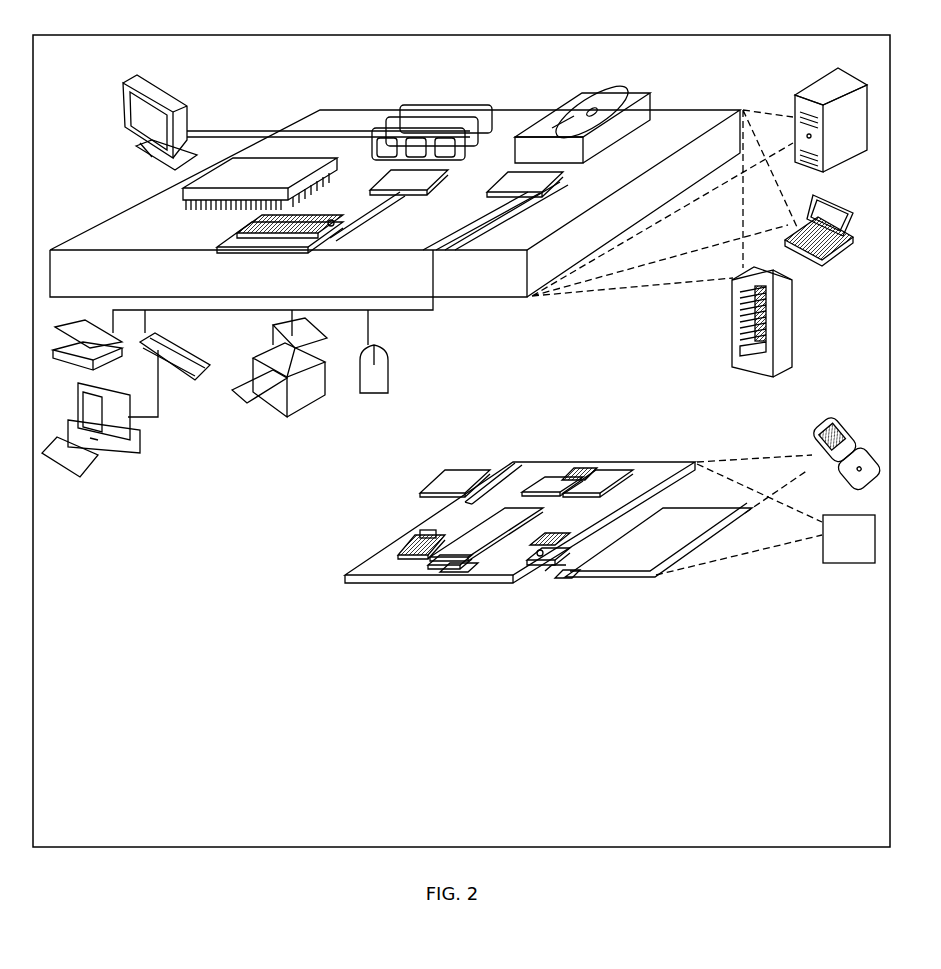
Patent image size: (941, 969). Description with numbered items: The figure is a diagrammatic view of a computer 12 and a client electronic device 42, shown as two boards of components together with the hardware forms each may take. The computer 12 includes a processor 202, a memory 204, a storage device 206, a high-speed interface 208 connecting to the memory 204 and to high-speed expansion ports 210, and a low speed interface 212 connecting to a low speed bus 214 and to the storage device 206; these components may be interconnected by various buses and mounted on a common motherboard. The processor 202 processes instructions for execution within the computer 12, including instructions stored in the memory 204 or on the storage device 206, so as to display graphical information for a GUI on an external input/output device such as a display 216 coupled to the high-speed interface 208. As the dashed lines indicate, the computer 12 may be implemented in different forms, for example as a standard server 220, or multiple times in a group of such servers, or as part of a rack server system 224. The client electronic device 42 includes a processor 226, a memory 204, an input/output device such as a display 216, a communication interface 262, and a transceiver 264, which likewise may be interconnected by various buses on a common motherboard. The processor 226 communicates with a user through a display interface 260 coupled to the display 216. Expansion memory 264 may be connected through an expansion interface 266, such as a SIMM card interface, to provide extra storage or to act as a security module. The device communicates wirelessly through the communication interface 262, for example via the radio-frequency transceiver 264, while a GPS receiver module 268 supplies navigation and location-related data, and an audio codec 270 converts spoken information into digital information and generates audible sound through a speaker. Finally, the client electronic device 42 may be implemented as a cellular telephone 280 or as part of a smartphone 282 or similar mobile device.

The computer 12 is at (265, 91).
The display 216 is at (125, 80).
The processor 202 is at (178, 194).
The high-speed expansion ports 210 is at (233, 227).
The high-speed interface 208 is at (373, 168).
The memory 204 is at (412, 102).
The low speed interface 212 is at (527, 183).
The storage device 206 is at (576, 95).
The standard server 220 is at (794, 95).
The rack server system 224 is at (729, 336).
The low speed bus 214 is at (442, 255).
The client electronic device 42 is at (495, 443).
The transceiver 264 is at (445, 468).
The expansion interface 266 is at (494, 464).
The communication interface 262 is at (543, 480).
The GPS receiver module 268 is at (578, 467).
The processor 226 is at (468, 566).
The display interface 260 is at (552, 565).
The audio codec 270 is at (563, 574).
The cellular telephone 280 is at (848, 420).
The smartphone 282 is at (838, 515).